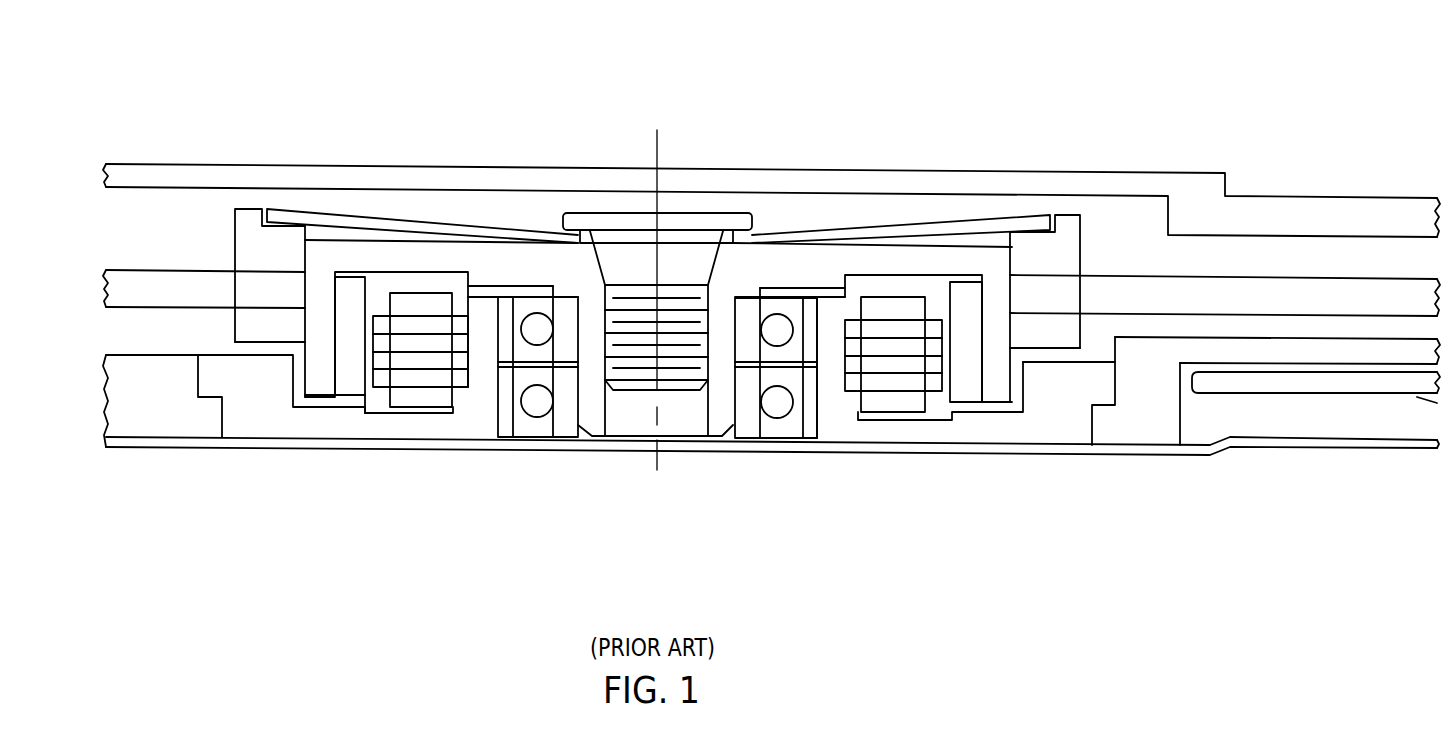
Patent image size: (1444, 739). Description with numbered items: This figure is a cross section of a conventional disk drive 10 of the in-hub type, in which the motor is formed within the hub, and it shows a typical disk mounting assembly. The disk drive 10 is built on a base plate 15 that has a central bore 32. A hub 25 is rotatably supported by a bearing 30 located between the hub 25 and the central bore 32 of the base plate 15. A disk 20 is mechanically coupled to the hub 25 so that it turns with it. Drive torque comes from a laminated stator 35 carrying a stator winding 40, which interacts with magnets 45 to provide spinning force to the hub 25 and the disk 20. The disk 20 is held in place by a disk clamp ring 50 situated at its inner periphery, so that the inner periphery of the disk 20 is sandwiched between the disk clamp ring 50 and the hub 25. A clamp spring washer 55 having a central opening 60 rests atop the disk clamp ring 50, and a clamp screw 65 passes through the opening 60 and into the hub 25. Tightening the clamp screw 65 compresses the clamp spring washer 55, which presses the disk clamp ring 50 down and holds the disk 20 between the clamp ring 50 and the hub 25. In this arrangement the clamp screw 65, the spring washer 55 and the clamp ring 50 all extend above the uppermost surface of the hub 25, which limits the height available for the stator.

The disk drive 10 is at (771, 276).
The base plate 15 is at (252, 418).
The disk 20 is at (177, 293).
The hub 25 is at (883, 256).
The bearing 30 is at (782, 428).
The central bore 32 is at (817, 405).
The laminated stator 35 is at (413, 360).
The stator winding 40 is at (428, 398).
The magnets 45 is at (350, 378).
The disk clamp ring 50 is at (247, 247).
The clamp spring washer 55 is at (372, 218).
The central opening 60 is at (752, 238).
The clamp screw 65 is at (690, 217).